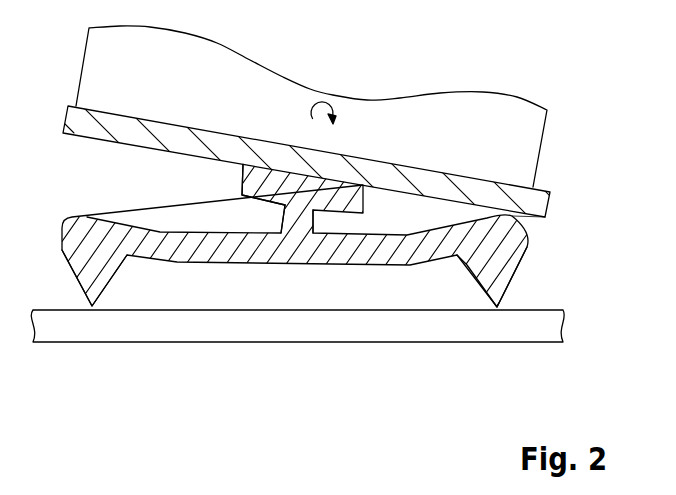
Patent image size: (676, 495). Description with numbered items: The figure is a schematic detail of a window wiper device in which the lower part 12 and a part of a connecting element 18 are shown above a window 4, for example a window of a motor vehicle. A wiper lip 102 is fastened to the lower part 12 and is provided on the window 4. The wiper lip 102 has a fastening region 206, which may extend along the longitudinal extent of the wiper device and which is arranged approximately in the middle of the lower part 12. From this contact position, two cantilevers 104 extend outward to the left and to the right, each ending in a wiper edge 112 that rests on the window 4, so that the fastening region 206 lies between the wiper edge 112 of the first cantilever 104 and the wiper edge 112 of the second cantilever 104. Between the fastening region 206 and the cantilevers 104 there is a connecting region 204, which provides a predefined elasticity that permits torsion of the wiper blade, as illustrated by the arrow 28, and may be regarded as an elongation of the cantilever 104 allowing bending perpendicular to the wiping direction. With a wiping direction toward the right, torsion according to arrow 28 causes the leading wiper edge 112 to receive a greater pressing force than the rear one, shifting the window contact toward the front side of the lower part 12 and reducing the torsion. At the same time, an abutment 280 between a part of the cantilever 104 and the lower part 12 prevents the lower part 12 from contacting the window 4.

The window 4 is at (551, 333).
The lower part 12 is at (536, 208).
The connecting element 18 is at (530, 153).
The arrow 28 is at (320, 100).
The wiper lip 102 is at (266, 396).
The cantilever 104 is at (195, 250).
The wiper edge 112 is at (87, 325).
The connecting region 204 is at (292, 220).
The fastening region 206 is at (246, 182).
The abutment 280 is at (539, 232).